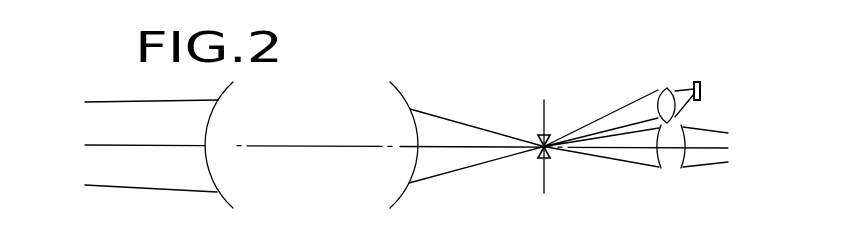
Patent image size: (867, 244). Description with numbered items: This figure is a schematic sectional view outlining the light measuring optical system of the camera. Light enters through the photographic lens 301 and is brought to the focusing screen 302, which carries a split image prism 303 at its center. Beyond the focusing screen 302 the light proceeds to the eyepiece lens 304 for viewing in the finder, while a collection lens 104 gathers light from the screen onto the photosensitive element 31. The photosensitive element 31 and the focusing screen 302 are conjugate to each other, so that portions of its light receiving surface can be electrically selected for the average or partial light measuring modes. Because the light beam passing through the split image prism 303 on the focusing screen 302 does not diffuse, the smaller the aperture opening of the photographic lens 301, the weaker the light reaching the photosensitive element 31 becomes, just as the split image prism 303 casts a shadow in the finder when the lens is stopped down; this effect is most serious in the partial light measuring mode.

The photographic lens 301 is at (365, 87).
The focusing screen 302 is at (540, 185).
The split image prism 303 is at (552, 152).
The collection lens 104 is at (665, 85).
The photosensitive element 31 is at (703, 92).
The eyepiece lens 304 is at (668, 170).